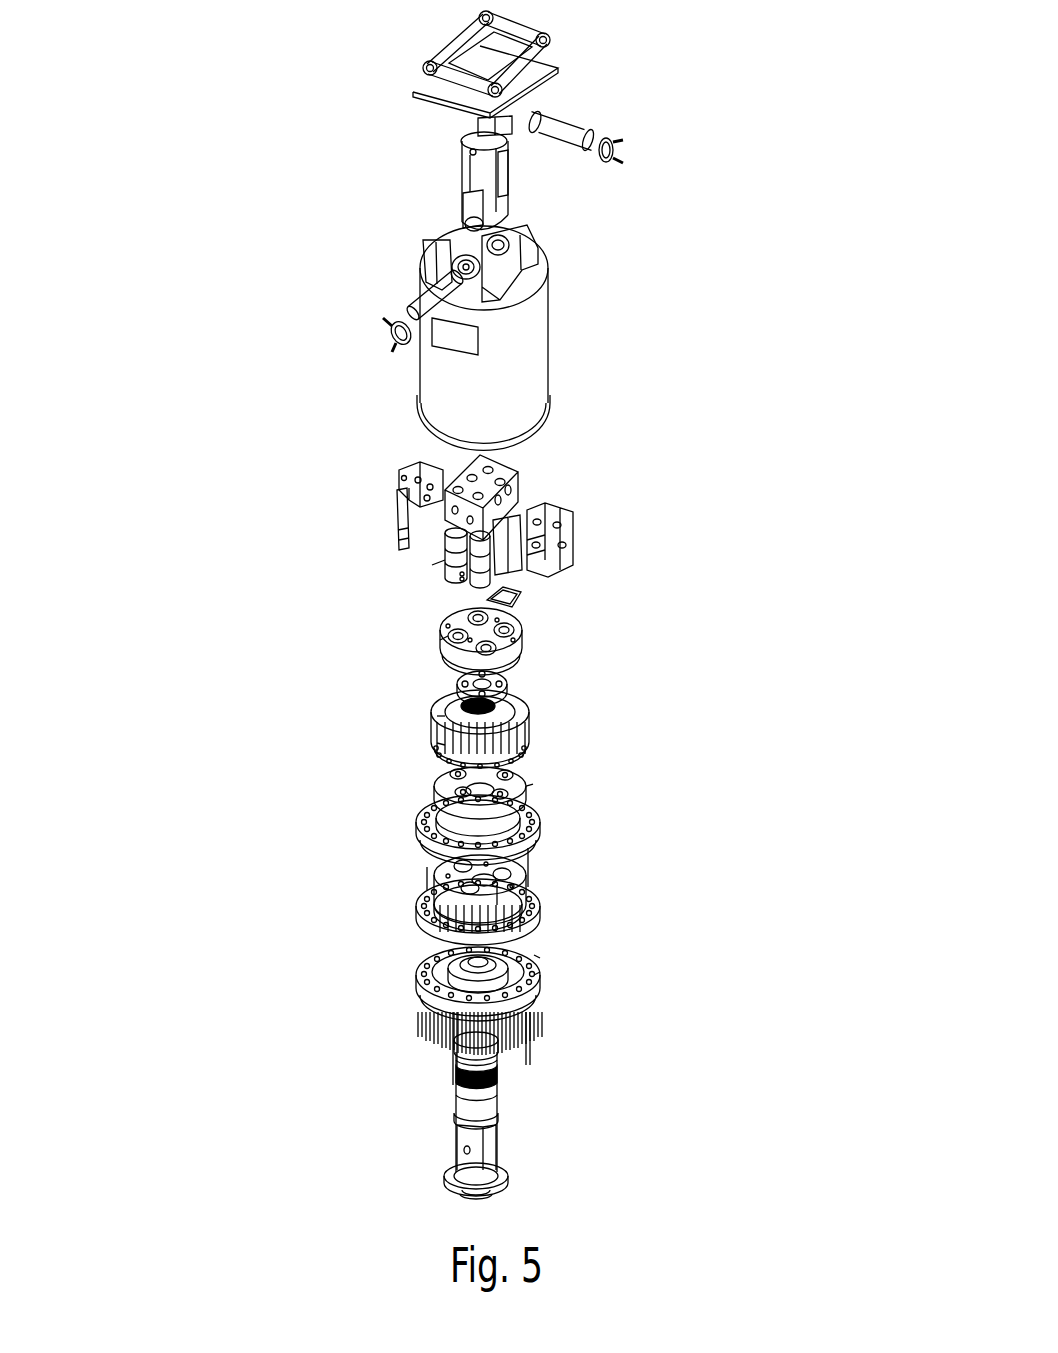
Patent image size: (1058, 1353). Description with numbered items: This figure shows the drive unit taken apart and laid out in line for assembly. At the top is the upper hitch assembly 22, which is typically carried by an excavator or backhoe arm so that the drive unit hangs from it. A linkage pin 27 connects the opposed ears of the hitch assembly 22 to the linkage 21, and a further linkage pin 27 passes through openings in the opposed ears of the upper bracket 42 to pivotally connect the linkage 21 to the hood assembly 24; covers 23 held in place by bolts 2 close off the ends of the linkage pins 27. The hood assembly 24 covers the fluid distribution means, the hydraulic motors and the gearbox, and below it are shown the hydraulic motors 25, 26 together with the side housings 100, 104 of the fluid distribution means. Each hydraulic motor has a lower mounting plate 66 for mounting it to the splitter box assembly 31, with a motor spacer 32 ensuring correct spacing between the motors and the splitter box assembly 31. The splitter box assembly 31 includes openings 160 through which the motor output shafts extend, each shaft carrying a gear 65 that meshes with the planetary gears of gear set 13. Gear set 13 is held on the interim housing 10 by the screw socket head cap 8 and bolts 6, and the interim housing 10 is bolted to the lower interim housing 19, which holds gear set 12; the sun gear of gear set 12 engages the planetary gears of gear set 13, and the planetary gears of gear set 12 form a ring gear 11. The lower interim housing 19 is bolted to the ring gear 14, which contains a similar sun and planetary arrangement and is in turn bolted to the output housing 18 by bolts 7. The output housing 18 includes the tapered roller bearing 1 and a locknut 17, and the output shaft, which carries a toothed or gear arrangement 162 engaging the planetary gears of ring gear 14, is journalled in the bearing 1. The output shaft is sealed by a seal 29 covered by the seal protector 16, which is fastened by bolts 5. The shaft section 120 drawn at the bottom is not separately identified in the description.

The tapered roller bearing 1 is at (540, 972).
The bolts 2 is at (637, 146).
The bolts 5 is at (457, 1198).
The bolts 6 is at (437, 718).
The bolts 7 is at (545, 1033).
The screw socket head cap 8 is at (533, 700).
The interim housing 10 is at (437, 743).
The ring gear 11 is at (533, 785).
The gear set 12 is at (430, 772).
The gear set 13 is at (447, 682).
The ring gear 14 is at (557, 910).
The seal protector 16 is at (440, 1177).
The locknut 17 is at (540, 960).
The output housing 18 is at (413, 973).
The lower interim housing 19 is at (550, 820).
The linkage 21 is at (457, 165).
The hitch assembly 22 is at (447, 38).
The covers 23 is at (383, 312).
The hood assembly 24 is at (550, 353).
The hydraulic motor 25 is at (527, 517).
The hydraulic motor 26 is at (430, 567).
The linkage pin 27 is at (410, 297).
The seal 29 is at (448, 1163).
The splitter box assembly 31 is at (437, 637).
The motor spacer 32 is at (530, 597).
The upper bracket 42 is at (530, 257).
The gear 65 is at (460, 578).
The lower mounting plate 66 is at (460, 575).
The side housing 100 is at (397, 490).
The side housing 104 is at (578, 530).
The shaft 120 is at (503, 1122).
The openings 160 is at (527, 632).
The toothed or gear arrangement 162 is at (500, 1080).